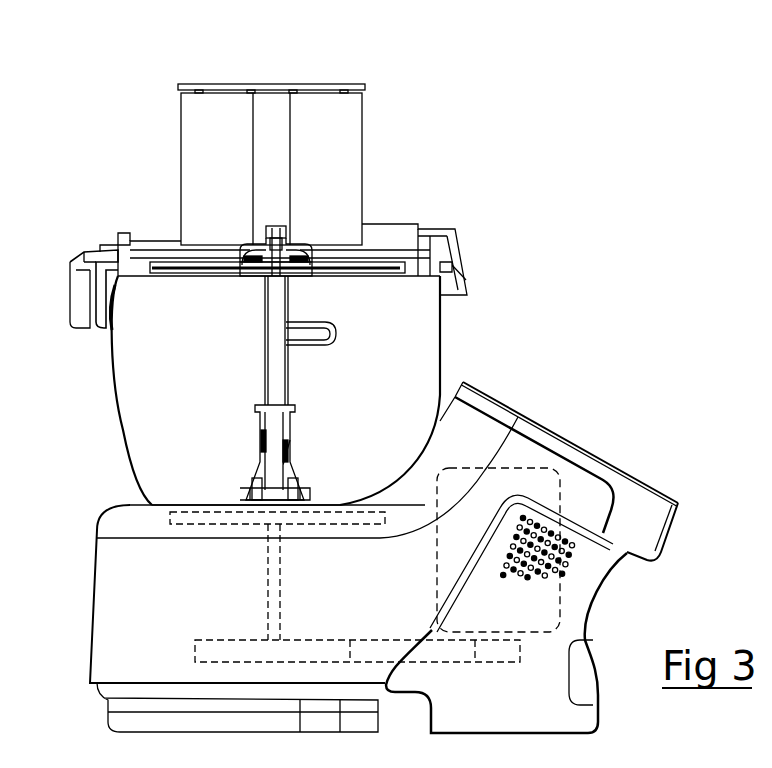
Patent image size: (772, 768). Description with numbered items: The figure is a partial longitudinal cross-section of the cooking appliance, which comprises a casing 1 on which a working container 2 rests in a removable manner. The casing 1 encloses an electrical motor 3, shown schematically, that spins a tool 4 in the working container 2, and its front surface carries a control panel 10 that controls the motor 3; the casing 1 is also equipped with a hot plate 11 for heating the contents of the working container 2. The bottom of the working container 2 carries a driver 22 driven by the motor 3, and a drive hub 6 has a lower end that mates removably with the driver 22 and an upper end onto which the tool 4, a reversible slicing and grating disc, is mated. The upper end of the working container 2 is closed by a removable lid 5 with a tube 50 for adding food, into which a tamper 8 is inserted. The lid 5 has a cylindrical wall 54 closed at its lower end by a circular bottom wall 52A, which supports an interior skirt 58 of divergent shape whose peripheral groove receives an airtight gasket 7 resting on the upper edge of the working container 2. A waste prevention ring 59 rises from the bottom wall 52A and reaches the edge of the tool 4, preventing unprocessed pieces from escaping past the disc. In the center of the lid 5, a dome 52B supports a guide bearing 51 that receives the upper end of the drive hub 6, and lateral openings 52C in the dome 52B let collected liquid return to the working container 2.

The casing 1 is at (95, 597).
The working container 2 is at (438, 360).
The electrical motor 3 is at (563, 598).
The tool 4 is at (350, 268).
The lid 5 is at (382, 222).
The drive hub 6 is at (264, 372).
The airtight gasket 7 is at (462, 272).
The tamper 8 is at (228, 85).
The control panel 10 is at (603, 455).
The hot plate 11 is at (207, 524).
The driver 22 is at (252, 490).
The tube 50 is at (181, 166).
The guide bearing 51 is at (250, 238).
The bottom wall 52A is at (160, 252).
The dome 52B is at (300, 240).
The lateral openings 52C is at (247, 252).
The cylindrical wall 54 is at (118, 238).
The interior skirt 58 is at (72, 258).
The waste prevention ring 59 is at (145, 282).